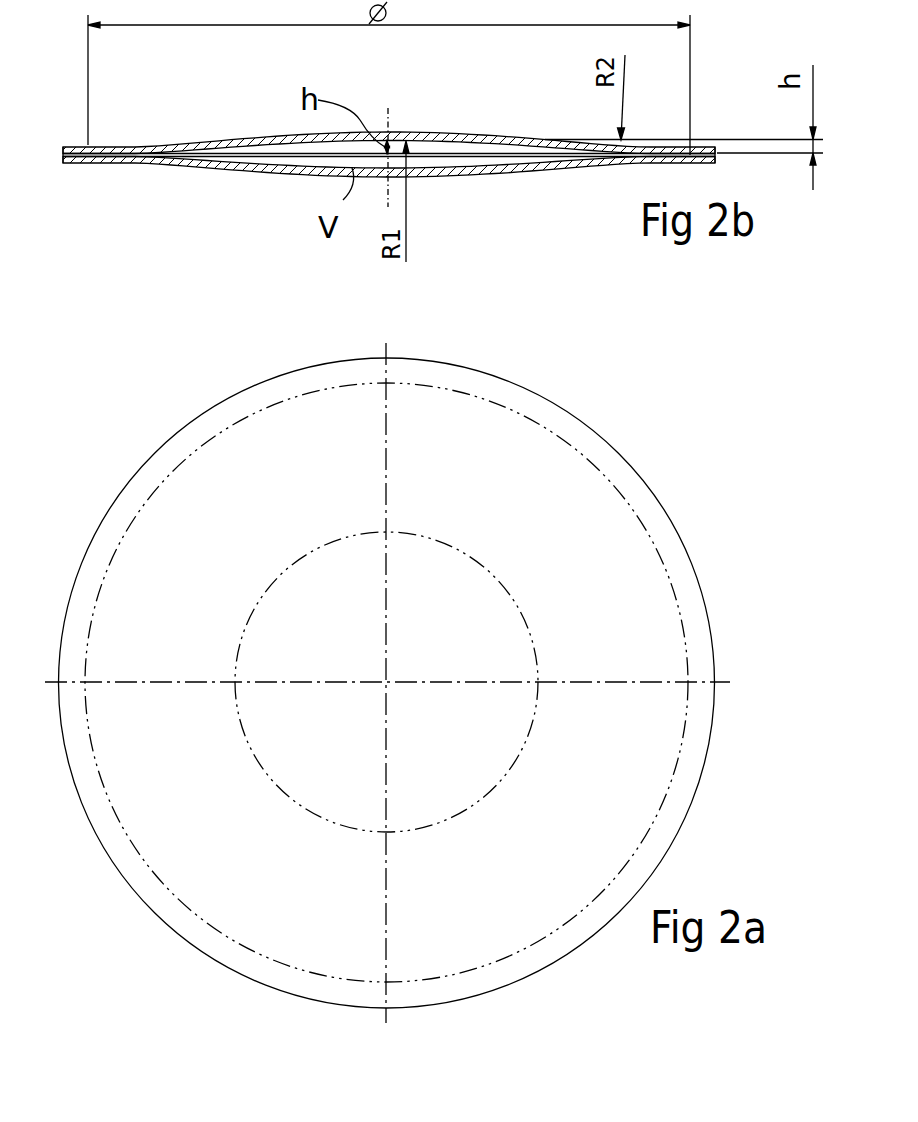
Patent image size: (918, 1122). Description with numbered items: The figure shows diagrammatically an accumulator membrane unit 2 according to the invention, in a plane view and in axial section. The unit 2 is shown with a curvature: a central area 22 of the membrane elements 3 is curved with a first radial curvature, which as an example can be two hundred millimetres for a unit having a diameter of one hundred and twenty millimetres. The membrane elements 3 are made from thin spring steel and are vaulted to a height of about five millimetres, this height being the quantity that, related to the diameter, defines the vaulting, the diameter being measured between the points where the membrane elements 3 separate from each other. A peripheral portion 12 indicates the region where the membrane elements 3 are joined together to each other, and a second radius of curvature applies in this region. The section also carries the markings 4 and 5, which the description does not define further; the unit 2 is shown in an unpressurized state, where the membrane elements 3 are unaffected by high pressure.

In FIG. 2B, the accumulator membrane unit 2 is at (375, 145).
In FIG. 2A, the accumulator membrane unit 2 is at (634, 437).
In FIG. 2B, the membrane elements 3 is at (440, 134).
In FIG. 2B, the interface / separating layer 4 is at (298, 158).
In FIG. 2B, the outer edge 5 is at (58, 153).
In FIG. 2A, the peripheral portion 12 is at (683, 594).
In FIG. 2A, the central area 22 is at (437, 663).